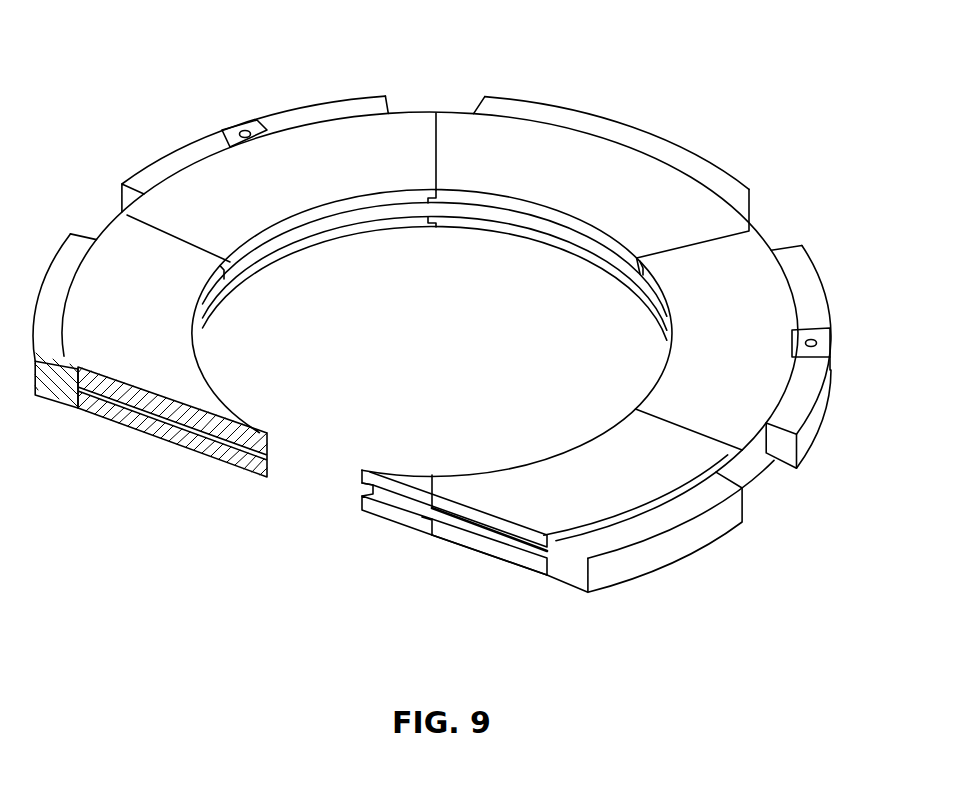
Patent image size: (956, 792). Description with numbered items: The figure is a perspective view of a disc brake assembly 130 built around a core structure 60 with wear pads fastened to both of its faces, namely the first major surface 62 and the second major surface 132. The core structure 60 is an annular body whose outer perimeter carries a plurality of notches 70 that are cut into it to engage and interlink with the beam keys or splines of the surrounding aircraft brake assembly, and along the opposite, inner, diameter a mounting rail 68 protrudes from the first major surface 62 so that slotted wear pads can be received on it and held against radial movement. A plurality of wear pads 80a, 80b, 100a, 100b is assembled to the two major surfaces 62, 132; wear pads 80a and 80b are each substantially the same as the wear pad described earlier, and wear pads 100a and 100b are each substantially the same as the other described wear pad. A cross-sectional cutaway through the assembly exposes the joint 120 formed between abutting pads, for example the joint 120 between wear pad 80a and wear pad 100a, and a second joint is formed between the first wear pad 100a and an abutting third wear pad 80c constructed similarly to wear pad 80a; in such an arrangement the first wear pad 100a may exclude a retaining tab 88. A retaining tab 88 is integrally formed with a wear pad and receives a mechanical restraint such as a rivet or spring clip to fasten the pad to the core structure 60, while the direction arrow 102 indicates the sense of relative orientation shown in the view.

The disc brake assembly 130 is at (188, 80).
The plurality of notches 70 is at (432, 344).
The wear pad 80a is at (413, 480).
The wear pad 80b is at (398, 517).
The third wear pad 80c is at (752, 265).
The first wear pad 100a is at (533, 482).
The wear pad 100b is at (533, 570).
The core structure 60 is at (512, 217).
The first major surface 62 is at (512, 530).
The mounting rail 68 is at (367, 472).
The retaining tab 88 is at (802, 343).
The rotation direction 102 is at (586, 486).
The joint 120 is at (445, 494).
The second major surface 132 is at (492, 553).